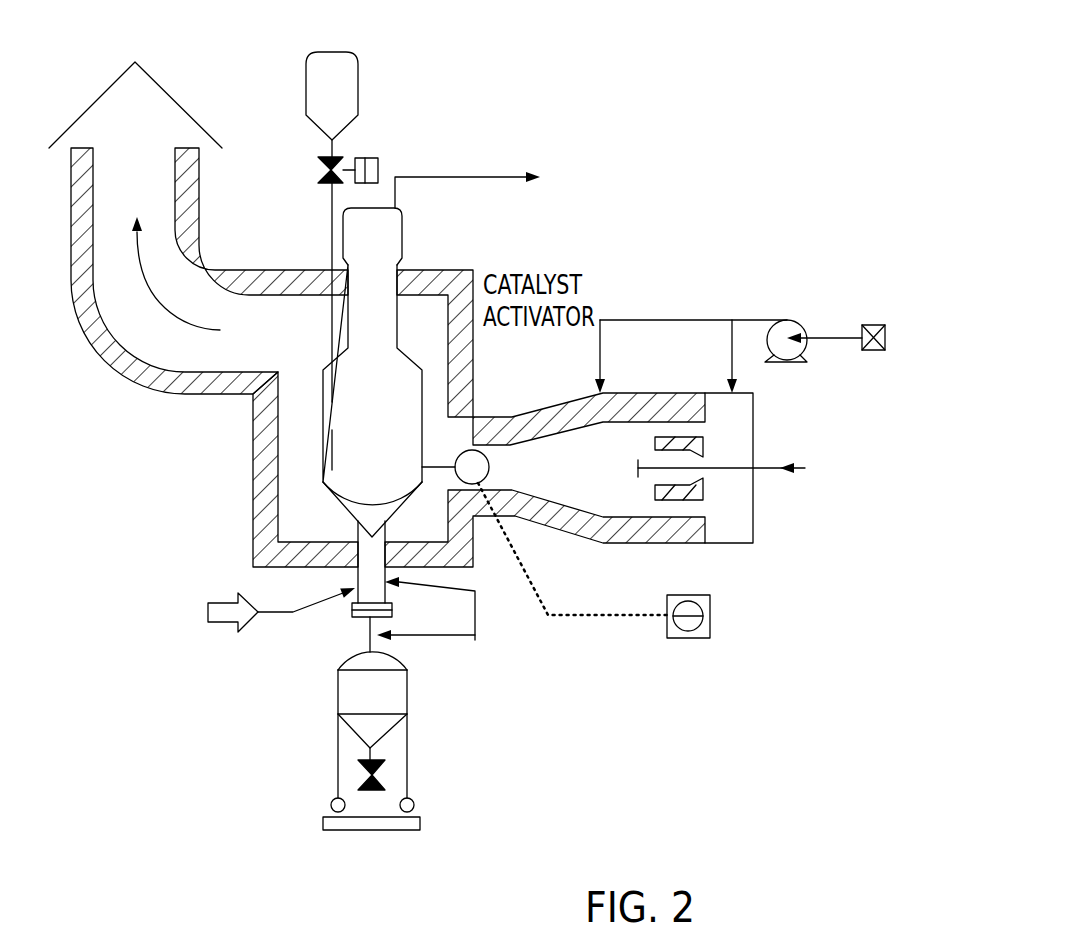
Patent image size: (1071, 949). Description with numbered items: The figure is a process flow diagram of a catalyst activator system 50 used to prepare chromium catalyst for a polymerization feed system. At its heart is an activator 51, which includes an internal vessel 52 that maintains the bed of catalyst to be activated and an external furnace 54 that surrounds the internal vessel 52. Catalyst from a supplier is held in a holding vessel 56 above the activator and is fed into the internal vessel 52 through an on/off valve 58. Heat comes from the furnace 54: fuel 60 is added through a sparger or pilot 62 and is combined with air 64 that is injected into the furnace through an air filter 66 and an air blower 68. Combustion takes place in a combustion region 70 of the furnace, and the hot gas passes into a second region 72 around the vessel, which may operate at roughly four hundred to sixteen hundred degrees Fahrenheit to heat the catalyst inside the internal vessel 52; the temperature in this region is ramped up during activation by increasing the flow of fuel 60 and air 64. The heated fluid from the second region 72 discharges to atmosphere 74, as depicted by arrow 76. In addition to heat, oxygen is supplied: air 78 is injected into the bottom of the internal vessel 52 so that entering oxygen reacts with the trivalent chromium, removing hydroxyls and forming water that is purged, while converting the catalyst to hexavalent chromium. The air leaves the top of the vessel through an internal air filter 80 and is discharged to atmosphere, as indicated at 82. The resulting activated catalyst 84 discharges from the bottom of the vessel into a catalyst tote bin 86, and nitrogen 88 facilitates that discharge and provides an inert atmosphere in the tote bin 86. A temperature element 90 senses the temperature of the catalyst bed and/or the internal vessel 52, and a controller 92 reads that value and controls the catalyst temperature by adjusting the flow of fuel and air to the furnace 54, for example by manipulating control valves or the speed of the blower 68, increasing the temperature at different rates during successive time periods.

The catalyst activator system 50 is at (730, 98).
The activator 51 is at (605, 242).
The internal vessel 52 is at (361, 456).
The external furnace 54 is at (557, 530).
The holding vessel 56 is at (310, 83).
The on/off valve 58 is at (327, 163).
The fuel 60 is at (763, 472).
The sparger or pilot 62 is at (703, 443).
The air 64 is at (658, 318).
The air filter 66 is at (875, 325).
The air blower 68 is at (787, 321).
The combustion region 70 is at (569, 483).
The second region 72 is at (296, 523).
The atmosphere 74 is at (150, 87).
The arrow 76 is at (157, 306).
The air 78 is at (273, 613).
The internal air filter 80 is at (356, 243).
The discharge to atmosphere 82 is at (462, 173).
The activated catalyst 84 is at (369, 701).
The catalyst tote bin 86 is at (347, 692).
The nitrogen 88 is at (475, 603).
The temperature element 90 is at (487, 480).
The controller 92 is at (683, 638).